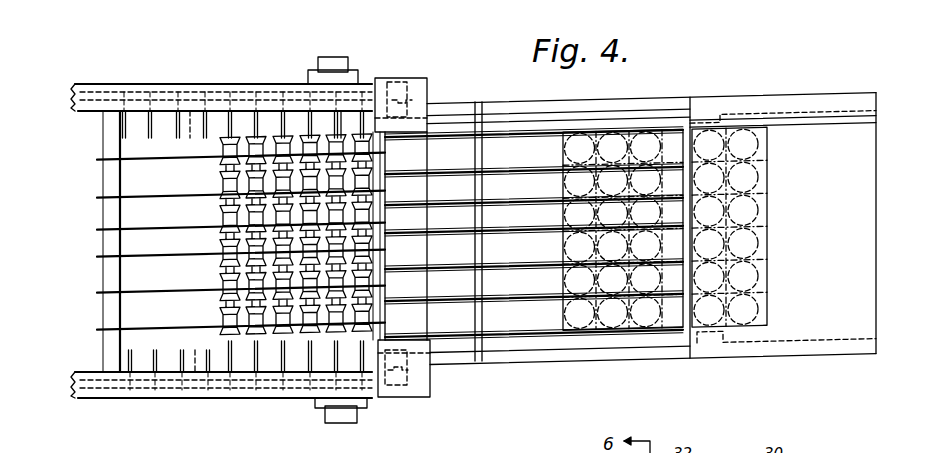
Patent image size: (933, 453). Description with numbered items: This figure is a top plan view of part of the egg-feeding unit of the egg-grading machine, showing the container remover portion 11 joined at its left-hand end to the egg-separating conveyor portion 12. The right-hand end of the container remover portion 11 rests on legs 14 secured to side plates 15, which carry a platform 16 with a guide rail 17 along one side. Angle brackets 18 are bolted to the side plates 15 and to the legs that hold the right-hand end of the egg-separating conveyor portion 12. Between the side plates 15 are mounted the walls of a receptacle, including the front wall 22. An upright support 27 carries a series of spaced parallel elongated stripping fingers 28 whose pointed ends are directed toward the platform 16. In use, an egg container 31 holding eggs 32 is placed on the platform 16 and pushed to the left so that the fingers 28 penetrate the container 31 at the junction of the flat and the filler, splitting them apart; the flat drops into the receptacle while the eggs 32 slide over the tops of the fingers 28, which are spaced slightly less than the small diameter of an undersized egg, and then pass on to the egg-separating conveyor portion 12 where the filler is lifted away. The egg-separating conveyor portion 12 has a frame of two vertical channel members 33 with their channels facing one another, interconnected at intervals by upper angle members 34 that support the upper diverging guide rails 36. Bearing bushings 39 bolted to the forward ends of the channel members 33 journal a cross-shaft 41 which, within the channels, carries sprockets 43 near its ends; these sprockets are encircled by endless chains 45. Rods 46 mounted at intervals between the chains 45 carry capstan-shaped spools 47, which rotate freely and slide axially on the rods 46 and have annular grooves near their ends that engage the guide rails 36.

The container remover portion 11 is at (713, 105).
The egg-separating conveyor portion 12 is at (234, 80).
The legs 14 is at (733, 128).
The side plates 15 is at (542, 117).
The platform 16 is at (876, 226).
The guide rail 17 is at (823, 145).
The angle brackets 18 is at (400, 78).
The front wall 22 is at (482, 230).
The upright support 27 is at (418, 93).
The stripping fingers 28 is at (512, 344).
The egg container 31 is at (770, 249).
The eggs 32 is at (767, 202).
The channel members 33 is at (165, 84).
The upper angle members 34 is at (108, 218).
The upper guide rails 36 is at (167, 169).
The bearing bushings 39 is at (349, 61).
The cross-shaft 41 is at (320, 122).
The sprockets 43 is at (328, 372).
The endless chains 45 is at (193, 353).
The rods 46 is at (124, 134).
The spools 47 is at (362, 162).